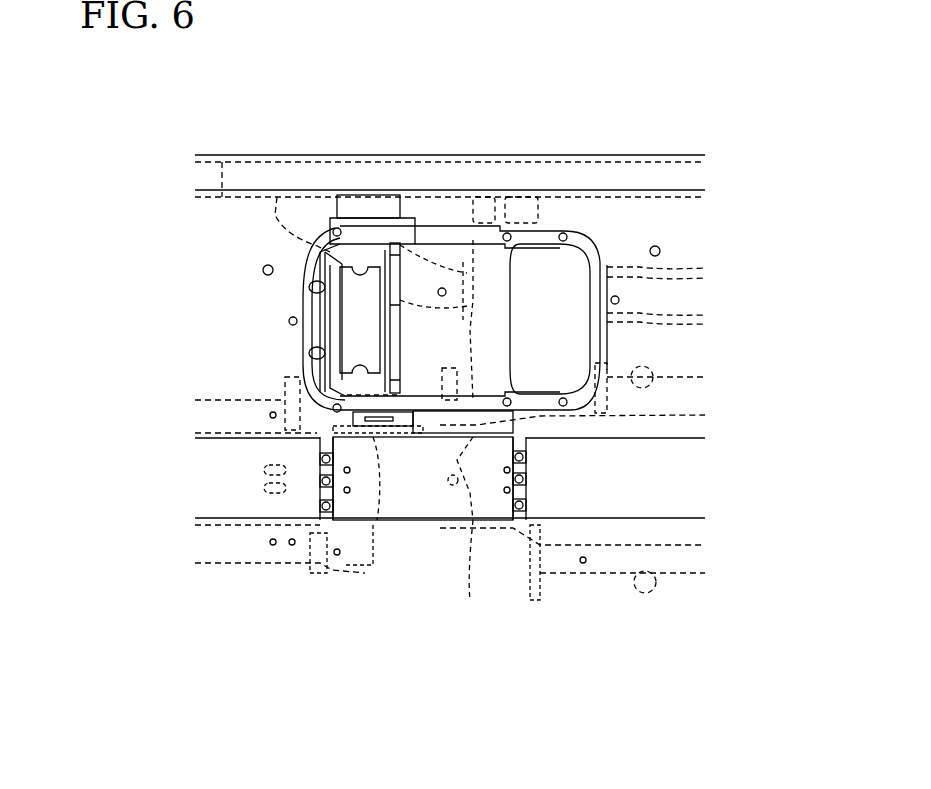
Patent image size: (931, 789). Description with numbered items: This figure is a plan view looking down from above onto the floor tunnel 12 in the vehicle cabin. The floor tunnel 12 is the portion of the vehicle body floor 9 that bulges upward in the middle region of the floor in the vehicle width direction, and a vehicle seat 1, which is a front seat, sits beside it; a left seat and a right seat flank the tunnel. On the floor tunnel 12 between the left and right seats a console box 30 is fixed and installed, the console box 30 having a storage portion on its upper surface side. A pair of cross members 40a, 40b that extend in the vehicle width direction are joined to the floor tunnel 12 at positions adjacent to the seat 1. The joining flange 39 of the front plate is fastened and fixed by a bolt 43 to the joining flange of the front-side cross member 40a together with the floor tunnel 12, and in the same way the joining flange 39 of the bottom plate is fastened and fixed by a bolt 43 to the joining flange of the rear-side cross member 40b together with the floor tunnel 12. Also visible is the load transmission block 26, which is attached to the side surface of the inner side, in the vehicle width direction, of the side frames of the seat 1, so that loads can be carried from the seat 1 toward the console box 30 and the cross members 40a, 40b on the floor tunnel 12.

The vehicle seat 1 is at (590, 233).
The vehicle body floor 9 is at (207, 275).
The floor tunnel 12 is at (600, 520).
The load transmission block 26 is at (397, 437).
The console box 30 is at (452, 523).
The joining flange 39 is at (320, 457).
The front-side cross member 40a is at (318, 528).
The rear-side cross member 40b is at (525, 535).
The bolt 43 is at (334, 460).